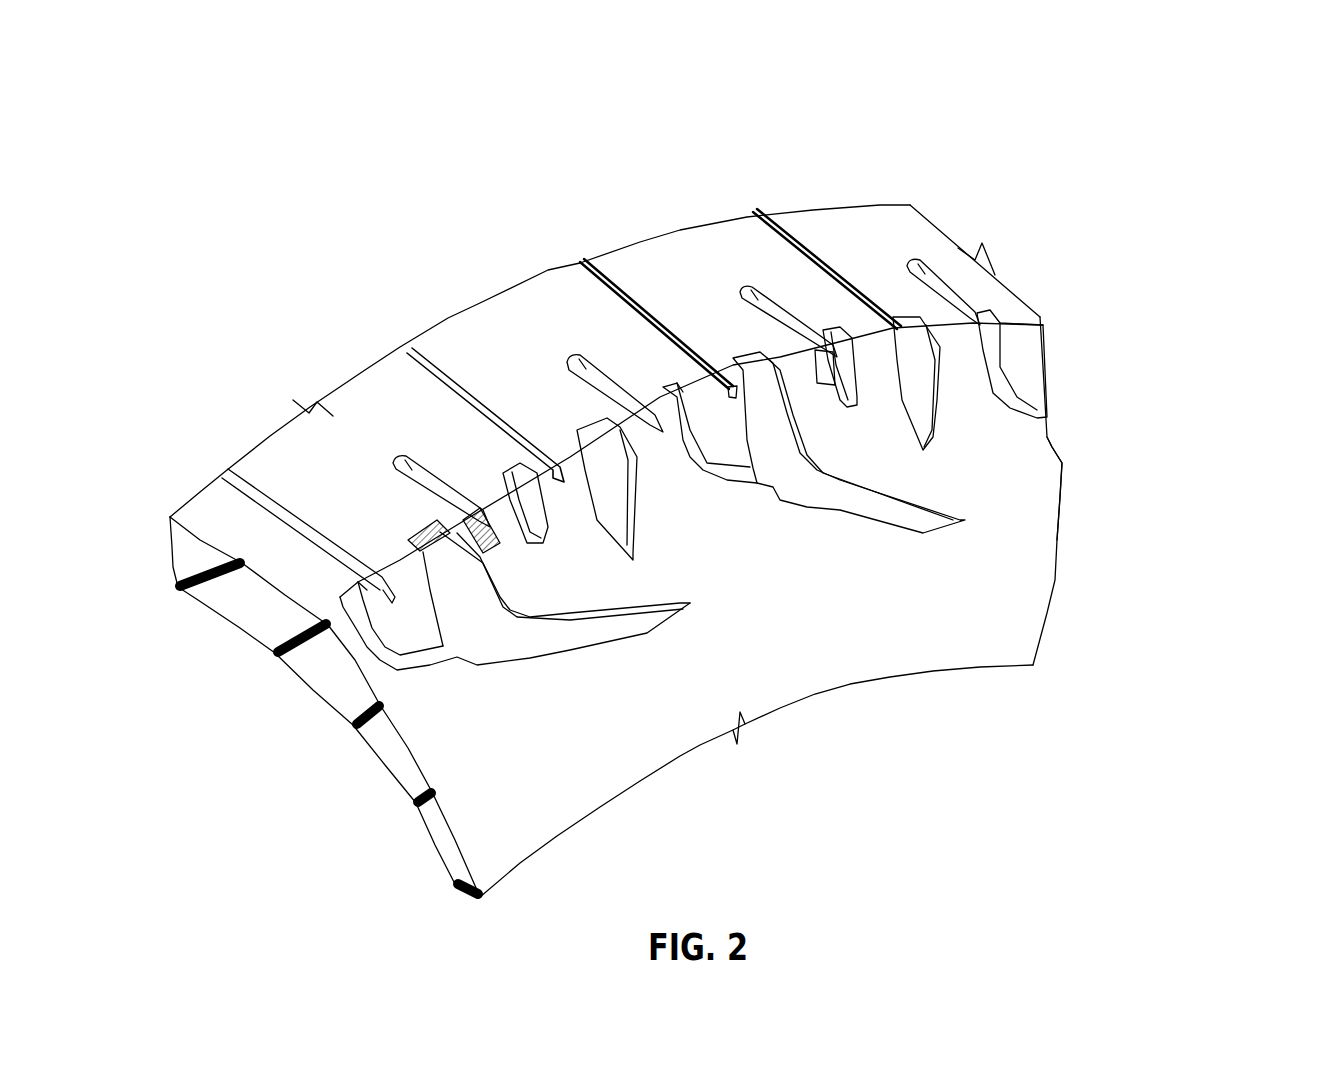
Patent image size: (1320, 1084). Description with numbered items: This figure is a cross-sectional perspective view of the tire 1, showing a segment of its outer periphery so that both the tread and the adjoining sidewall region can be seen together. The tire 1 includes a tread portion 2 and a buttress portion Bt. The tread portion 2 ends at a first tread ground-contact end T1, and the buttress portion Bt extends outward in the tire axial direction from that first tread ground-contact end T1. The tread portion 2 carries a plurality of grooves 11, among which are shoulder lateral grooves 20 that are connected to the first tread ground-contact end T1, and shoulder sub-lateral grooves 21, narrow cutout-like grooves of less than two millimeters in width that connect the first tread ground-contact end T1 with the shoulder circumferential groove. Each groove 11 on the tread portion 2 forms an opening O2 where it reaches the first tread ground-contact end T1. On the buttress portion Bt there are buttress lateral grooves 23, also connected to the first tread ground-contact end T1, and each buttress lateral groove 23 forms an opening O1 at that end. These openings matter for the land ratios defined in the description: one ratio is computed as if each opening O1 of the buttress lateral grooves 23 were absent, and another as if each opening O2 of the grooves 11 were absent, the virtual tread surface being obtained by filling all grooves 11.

The tire 1 is at (1075, 147).
The tread portion 2 is at (999, 165).
The grooves 11 is at (687, 260).
The shoulder lateral grooves 20 is at (773, 310).
The shoulder sub-lateral grooves 21 is at (623, 297).
The buttress lateral grooves 23 is at (855, 525).
The opening O1 is at (438, 533).
The opening O2 is at (490, 540).
The first tread ground-contact end T1 is at (1020, 323).
The buttress portion Bt is at (1096, 380).